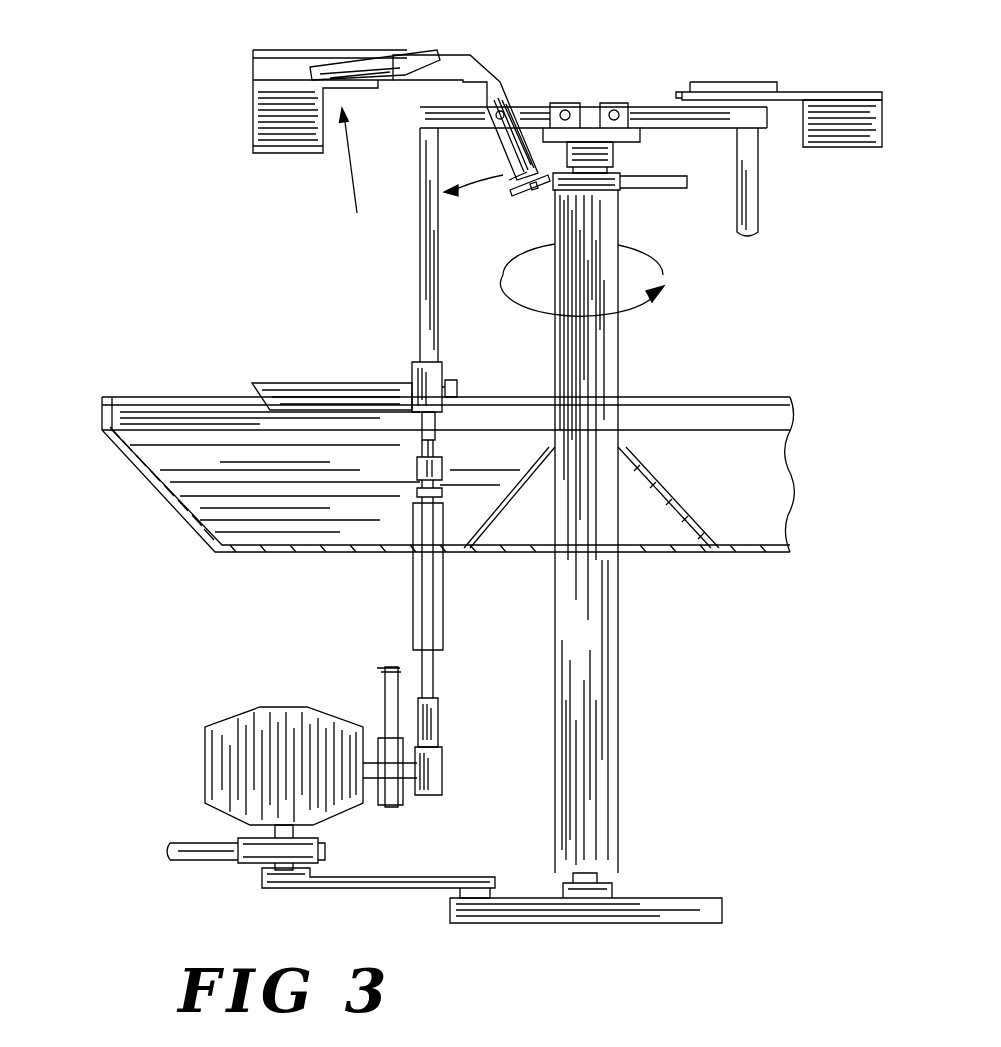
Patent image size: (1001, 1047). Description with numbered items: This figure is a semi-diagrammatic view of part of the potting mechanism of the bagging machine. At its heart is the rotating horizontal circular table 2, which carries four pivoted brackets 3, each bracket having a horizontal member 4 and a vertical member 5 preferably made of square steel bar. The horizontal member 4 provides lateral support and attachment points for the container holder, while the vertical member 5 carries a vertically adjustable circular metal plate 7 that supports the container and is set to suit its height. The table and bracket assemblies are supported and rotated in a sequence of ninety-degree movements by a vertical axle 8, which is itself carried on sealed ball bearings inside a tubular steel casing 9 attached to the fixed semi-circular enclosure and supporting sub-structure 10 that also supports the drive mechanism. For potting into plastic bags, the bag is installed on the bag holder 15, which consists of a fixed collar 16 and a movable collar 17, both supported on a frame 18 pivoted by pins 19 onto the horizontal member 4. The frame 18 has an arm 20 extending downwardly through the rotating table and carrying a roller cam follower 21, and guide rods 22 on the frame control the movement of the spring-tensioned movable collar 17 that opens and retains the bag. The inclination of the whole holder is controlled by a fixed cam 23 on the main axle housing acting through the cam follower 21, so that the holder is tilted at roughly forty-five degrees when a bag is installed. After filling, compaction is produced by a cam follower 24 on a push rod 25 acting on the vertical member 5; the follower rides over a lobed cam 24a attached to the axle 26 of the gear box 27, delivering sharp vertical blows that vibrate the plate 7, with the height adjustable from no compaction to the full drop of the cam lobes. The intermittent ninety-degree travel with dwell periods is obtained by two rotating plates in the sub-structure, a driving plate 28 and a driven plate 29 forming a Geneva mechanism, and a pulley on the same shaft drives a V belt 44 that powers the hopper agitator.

The rotating horizontal circular table 2 is at (632, 133).
The pivoted bracket 3 is at (747, 123).
The horizontal member 4 is at (443, 117).
The vertical member 5 is at (425, 305).
The circular metal plate 7 is at (303, 393).
The vertical axle 8 is at (577, 167).
The tubular steel casing 9 is at (603, 360).
The enclosure and supporting sub-structure 10 is at (279, 557).
The bag holder 15 is at (240, 161).
The fixed collar 16 is at (288, 137).
The movable collar 17 is at (845, 130).
The frame 18 is at (473, 66).
The pins 19 is at (506, 110).
The arm 20 is at (520, 160).
The roller cam follower 21 is at (518, 196).
The guide rods 22 is at (782, 96).
The fixed cam 23 is at (655, 183).
The cam follower 24 is at (430, 728).
The cam 24a is at (433, 765).
The push rod 25 is at (430, 688).
The axle 26 is at (410, 768).
The gear box 27 is at (263, 727).
The driving plate 28 is at (400, 883).
The driven plate 29 is at (652, 917).
The V belt 44 is at (232, 848).